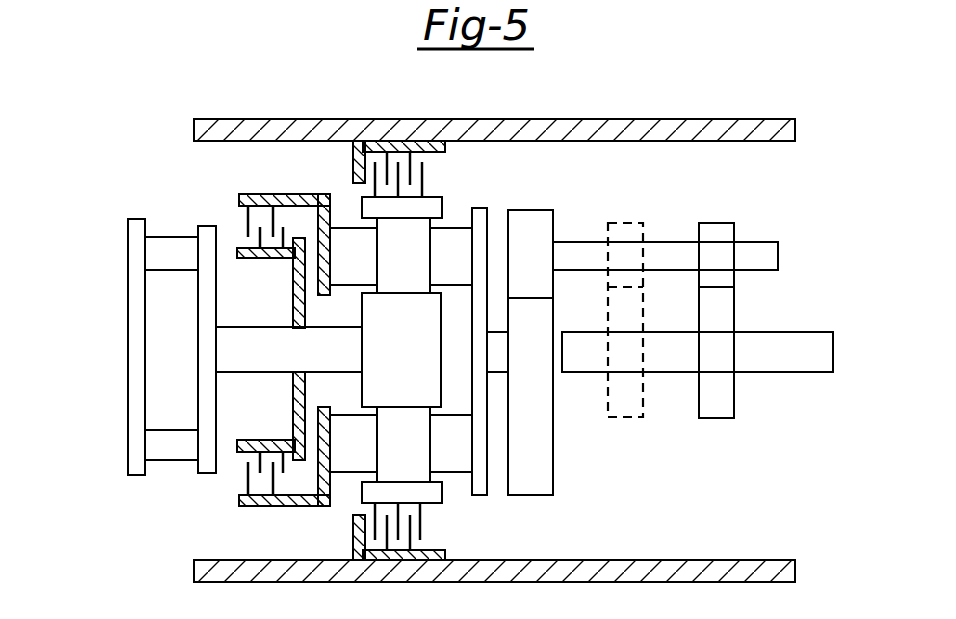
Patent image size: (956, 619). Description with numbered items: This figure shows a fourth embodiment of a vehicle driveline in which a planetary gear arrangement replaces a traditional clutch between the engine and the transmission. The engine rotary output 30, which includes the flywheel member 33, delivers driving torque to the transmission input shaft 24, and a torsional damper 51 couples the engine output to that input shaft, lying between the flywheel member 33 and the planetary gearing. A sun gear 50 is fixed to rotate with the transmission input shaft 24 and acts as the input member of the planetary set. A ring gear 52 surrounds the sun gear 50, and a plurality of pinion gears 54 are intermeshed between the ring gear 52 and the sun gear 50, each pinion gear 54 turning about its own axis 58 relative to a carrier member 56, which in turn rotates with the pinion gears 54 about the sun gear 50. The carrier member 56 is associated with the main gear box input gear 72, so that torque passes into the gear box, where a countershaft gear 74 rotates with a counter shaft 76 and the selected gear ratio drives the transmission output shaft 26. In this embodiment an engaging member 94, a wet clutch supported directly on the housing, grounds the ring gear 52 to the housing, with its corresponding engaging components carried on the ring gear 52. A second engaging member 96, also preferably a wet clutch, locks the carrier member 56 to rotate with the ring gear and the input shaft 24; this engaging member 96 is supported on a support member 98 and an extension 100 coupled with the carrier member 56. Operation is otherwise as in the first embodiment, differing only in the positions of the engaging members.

The transmission input shaft 24 is at (234, 373).
The transmission output shaft 26 is at (825, 365).
The rotary output 30 is at (128, 375).
The flywheel member 33 is at (133, 452).
The sun gear 50 is at (413, 367).
The torsional damper 51 is at (205, 464).
The ring gear 52 is at (442, 208).
The pinion gears 54 is at (417, 270).
The carrier member 56 is at (332, 202).
The pinion gear axis 58 is at (464, 270).
The main gear box input gear 72 is at (533, 457).
The countershaft gear 74 is at (543, 220).
The counter shaft 76 is at (760, 255).
The engaging member 94 is at (353, 163).
The engaging member 96 is at (271, 258).
The support member 98 is at (300, 329).
The extension 100 is at (240, 198).